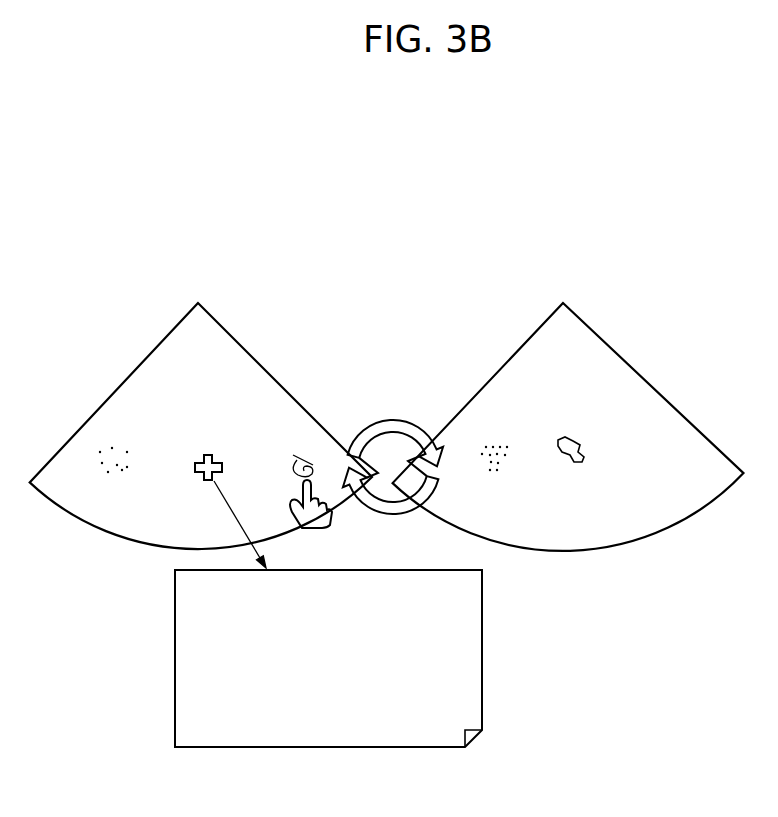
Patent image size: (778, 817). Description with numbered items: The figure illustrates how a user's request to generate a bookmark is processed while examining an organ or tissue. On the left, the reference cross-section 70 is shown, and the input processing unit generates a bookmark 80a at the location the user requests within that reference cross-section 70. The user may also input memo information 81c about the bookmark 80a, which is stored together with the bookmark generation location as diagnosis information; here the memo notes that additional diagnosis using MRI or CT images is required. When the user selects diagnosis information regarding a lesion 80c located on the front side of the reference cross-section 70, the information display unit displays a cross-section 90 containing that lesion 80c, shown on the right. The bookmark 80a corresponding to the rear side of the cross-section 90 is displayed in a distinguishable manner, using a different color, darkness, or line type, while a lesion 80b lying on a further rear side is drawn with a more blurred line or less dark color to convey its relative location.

The reference cross-section 70 is at (210, 341).
The cross-section 90 is at (583, 338).
The bookmark 80a is at (207, 455).
The lesion 80b is at (110, 452).
The lesion 80c is at (300, 458).
The memo information 81c is at (338, 570).